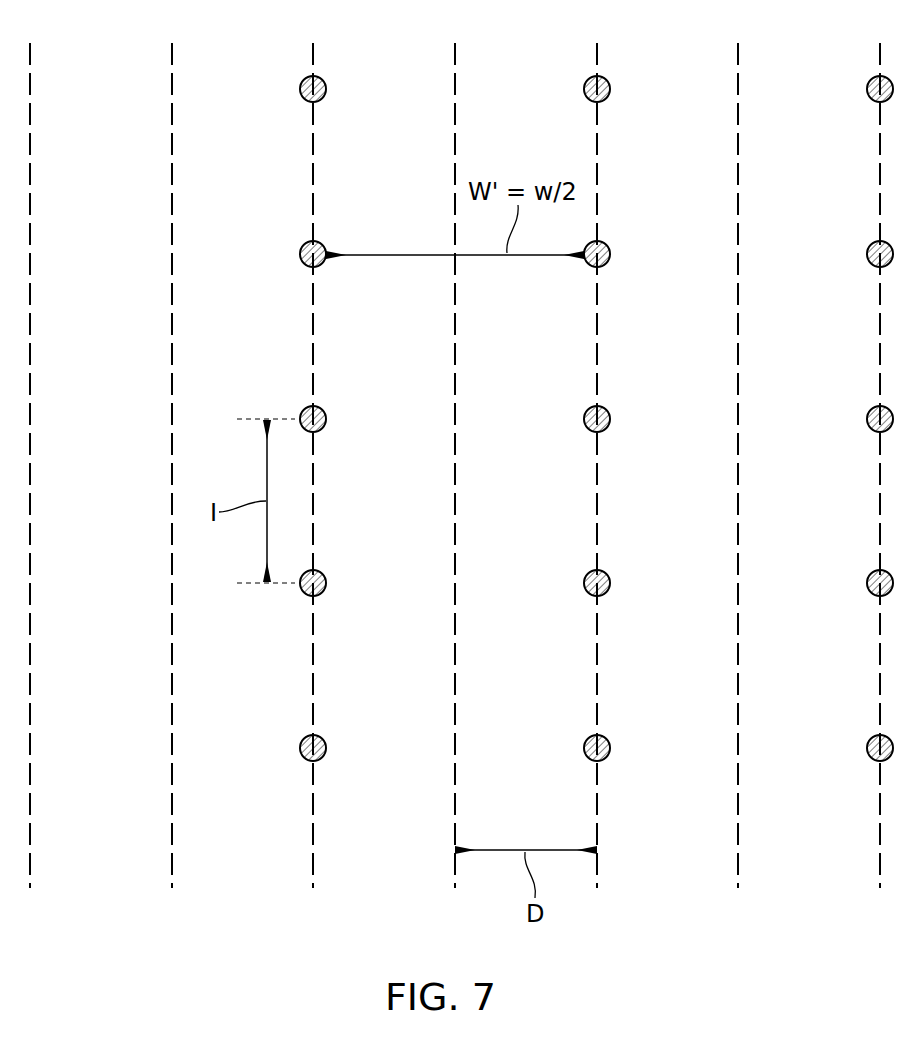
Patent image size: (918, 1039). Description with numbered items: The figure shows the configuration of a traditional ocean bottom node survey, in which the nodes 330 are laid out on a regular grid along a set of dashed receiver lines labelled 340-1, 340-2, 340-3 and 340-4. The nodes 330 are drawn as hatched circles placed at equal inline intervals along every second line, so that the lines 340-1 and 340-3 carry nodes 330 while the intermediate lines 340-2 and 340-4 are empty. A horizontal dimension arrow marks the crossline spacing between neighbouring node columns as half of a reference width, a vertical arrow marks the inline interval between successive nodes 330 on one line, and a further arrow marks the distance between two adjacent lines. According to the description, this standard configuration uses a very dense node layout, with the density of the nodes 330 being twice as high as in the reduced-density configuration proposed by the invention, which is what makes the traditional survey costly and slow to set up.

The nodes 330 is at (326, 419).
The column line 340-1 is at (313, 678).
The column line 340-2 is at (455, 590).
The column line 340-3 is at (597, 708).
The column line 340-4 is at (738, 645).